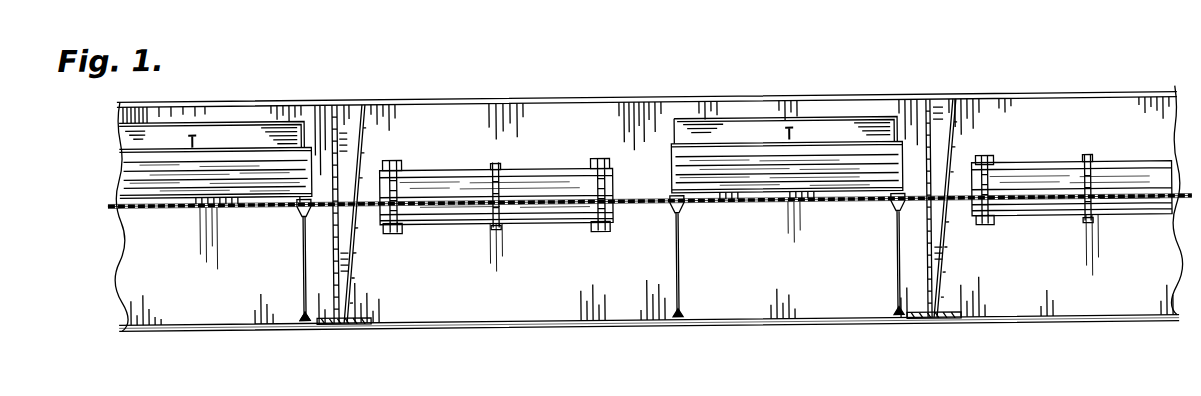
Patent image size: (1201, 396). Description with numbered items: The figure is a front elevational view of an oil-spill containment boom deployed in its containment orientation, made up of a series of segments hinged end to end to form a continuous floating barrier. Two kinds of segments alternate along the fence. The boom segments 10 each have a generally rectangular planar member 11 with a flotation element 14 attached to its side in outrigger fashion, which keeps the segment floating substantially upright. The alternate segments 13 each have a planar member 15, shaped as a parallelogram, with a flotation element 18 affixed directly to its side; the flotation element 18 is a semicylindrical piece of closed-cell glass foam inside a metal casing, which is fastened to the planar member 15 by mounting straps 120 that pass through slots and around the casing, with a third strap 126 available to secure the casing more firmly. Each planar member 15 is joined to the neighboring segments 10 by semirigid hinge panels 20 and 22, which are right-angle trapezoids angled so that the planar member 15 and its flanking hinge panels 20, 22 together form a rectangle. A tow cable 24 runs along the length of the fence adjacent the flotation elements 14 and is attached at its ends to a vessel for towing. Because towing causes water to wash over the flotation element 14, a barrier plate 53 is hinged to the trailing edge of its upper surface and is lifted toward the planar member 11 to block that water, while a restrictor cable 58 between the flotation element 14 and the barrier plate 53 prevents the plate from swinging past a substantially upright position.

The boom segment 10 is at (240, 328).
The planar member 11 is at (277, 320).
The alternate segment 13 is at (482, 330).
The flotation element 14 is at (264, 196).
The planar member 15 is at (578, 106).
The flotation element 18 is at (453, 213).
The hinge panel 20 is at (348, 112).
The hinge panel 22 is at (644, 323).
The tow cable 24 is at (163, 207).
The barrier plate 53 is at (262, 128).
The restrictor cable 58 is at (198, 136).
The mounting strap 120 is at (398, 171).
The third strap 126 is at (500, 178).